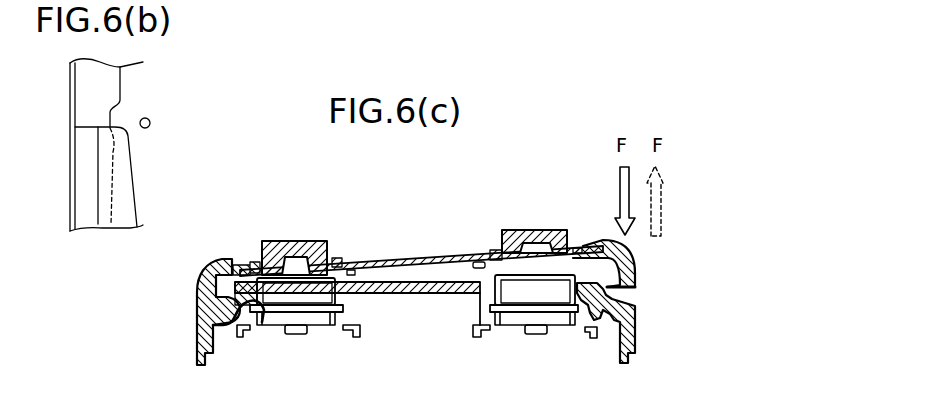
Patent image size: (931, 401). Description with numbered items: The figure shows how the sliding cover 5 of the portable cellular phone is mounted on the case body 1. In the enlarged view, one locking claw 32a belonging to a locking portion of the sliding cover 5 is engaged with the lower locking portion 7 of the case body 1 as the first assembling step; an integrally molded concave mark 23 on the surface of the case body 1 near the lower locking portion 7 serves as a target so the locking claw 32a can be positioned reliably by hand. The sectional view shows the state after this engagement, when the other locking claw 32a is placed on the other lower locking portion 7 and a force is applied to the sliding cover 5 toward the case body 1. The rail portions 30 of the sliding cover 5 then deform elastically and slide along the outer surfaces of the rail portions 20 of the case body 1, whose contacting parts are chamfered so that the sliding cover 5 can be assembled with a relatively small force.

In FIG. 6B, the case body 1 is at (133, 80).
In FIG. 6C, the case body 1 is at (197, 334).
In FIG. 6B, the sliding cover 5 is at (98, 202).
In FIG. 6C, the sliding cover 5 is at (420, 256).
In FIG. 6B, the locking claw 32a is at (115, 152).
In FIG. 6B, the lower locking portion 7 is at (116, 152).
In FIG. 6B, the concave mark 23 is at (151, 122).
In FIG. 6C, the rail portion 20 is at (605, 297).
In FIG. 6C, the rail portion 30 is at (635, 282).